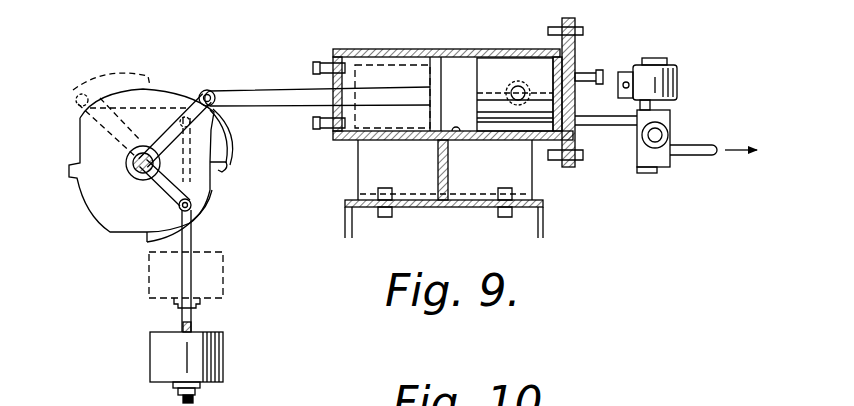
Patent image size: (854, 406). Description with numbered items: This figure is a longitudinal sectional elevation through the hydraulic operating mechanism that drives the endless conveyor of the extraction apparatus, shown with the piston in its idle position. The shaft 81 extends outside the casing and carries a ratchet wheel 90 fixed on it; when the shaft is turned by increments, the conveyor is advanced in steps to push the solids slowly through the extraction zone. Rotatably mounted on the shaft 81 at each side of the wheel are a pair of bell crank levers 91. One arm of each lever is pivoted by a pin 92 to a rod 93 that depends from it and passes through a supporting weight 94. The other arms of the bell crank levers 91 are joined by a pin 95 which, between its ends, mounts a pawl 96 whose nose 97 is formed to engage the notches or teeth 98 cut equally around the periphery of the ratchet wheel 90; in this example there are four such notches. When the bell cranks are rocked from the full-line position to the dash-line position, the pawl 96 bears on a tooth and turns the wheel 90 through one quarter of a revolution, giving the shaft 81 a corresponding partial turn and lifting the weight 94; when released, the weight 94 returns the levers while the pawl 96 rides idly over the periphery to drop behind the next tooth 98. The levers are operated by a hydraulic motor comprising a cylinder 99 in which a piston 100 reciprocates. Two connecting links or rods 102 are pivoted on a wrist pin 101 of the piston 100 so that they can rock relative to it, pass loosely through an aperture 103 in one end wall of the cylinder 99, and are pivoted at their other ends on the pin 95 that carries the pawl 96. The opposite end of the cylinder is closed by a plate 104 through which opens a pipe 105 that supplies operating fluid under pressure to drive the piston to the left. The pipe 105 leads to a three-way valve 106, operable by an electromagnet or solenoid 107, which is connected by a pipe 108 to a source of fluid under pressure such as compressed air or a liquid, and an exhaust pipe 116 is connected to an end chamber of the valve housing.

The shaft 81 is at (136, 179).
The ratchet wheel 90 is at (79, 175).
The bell crank levers 91 is at (170, 185).
The pin 92 is at (193, 210).
The rod 93 is at (193, 312).
The supporting weight 94 is at (167, 357).
The pin 95 is at (204, 90).
The pawl 96 is at (236, 130).
The nose 97 is at (224, 168).
The notches or teeth 98 is at (140, 236).
The cylinder 99 is at (455, 131).
The piston 100 is at (497, 60).
The wrist pin 101 is at (512, 88).
The connecting links or rods 102 is at (366, 76).
The aperture 103 is at (333, 85).
The plate 104 is at (577, 47).
The pipe 105 is at (593, 126).
The three-way valve 106 is at (677, 106).
The solenoid 107 is at (697, 42).
The pipe 108 is at (670, 128).
The exhaust pipe 116 is at (712, 147).